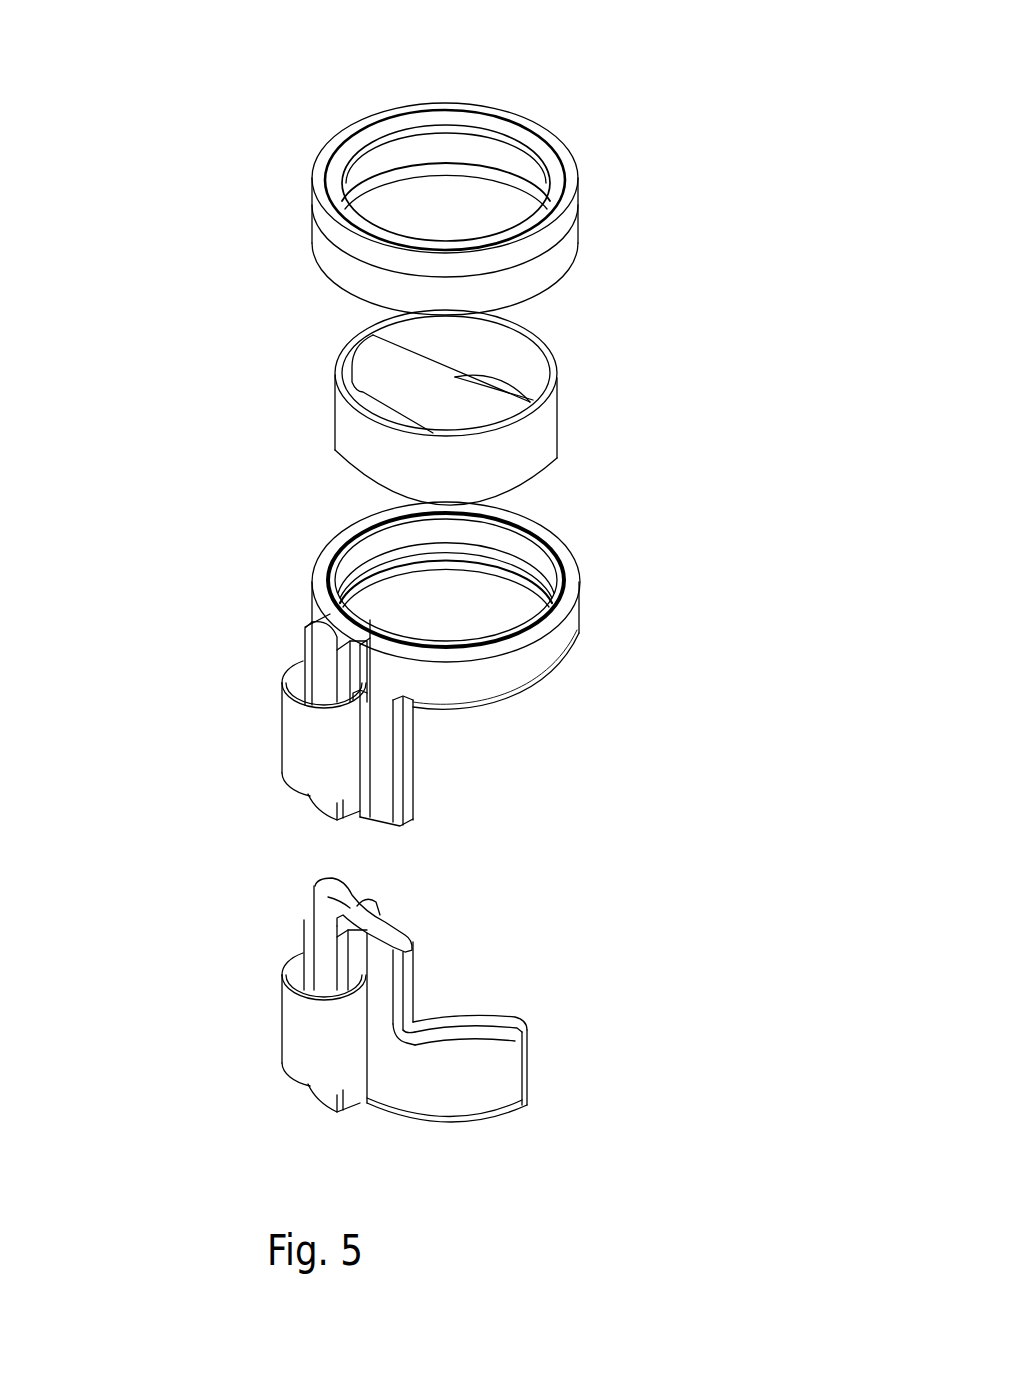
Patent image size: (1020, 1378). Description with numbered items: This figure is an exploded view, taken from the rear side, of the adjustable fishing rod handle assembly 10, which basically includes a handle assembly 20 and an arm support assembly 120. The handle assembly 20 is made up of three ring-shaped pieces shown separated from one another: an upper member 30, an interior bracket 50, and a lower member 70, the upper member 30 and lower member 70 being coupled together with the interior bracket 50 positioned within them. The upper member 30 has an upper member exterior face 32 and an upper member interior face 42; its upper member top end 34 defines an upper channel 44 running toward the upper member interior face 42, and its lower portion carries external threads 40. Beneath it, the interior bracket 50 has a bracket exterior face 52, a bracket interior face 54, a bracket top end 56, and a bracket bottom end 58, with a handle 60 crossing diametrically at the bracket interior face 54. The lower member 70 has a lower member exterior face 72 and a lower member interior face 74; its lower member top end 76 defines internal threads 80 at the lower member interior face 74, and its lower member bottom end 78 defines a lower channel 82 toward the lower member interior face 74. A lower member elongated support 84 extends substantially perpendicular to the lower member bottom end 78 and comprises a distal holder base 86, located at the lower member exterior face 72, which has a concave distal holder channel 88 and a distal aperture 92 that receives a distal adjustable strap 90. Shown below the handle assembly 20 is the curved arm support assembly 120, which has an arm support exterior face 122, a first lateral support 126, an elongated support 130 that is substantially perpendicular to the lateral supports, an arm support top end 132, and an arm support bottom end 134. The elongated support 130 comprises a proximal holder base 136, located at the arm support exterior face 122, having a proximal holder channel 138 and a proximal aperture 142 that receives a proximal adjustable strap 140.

The adjustable fishing rod handle assembly 10 is at (703, 225).
The handle assembly 20 is at (785, 375).
The upper member 30 is at (182, 202).
The upper member exterior face 32 is at (560, 255).
The upper member top end 34 is at (500, 110).
The external threads 40 is at (444, 170).
The upper member interior face 42 is at (432, 148).
The upper channel 44 is at (370, 147).
The interior bracket 50 is at (130, 385).
The bracket exterior face 52 is at (518, 452).
The bracket interior face 54 is at (517, 360).
The bracket top end 56 is at (333, 373).
The bracket bottom end 58 is at (545, 475).
The handle 60 is at (397, 385).
The lower member 70 is at (100, 555).
The lower member exterior face 72 is at (567, 635).
The lower member interior face 74 is at (353, 557).
The lower member top end 76 is at (573, 557).
The lower member bottom end 78 is at (558, 670).
The internal threads 80 is at (353, 518).
The lower channel 82 is at (452, 562).
The lower member elongated support 84 is at (397, 800).
The distal holder base 86 is at (303, 635).
The distal holder channel 88 is at (320, 672).
The distal adjustable strap 90 is at (293, 765).
The distal aperture 92 is at (365, 747).
The arm support assembly 120 is at (680, 1005).
The arm support exterior face 122 is at (497, 1082).
The first lateral support 126 is at (507, 1012).
The elongated support 130 is at (415, 970).
The arm support top end 132 is at (336, 893).
The arm support bottom end 134 is at (488, 1113).
The proximal holder base 136 is at (308, 920).
The proximal holder channel 138 is at (325, 963).
The proximal adjustable strap 140 is at (297, 1037).
The proximal aperture 142 is at (367, 1043).